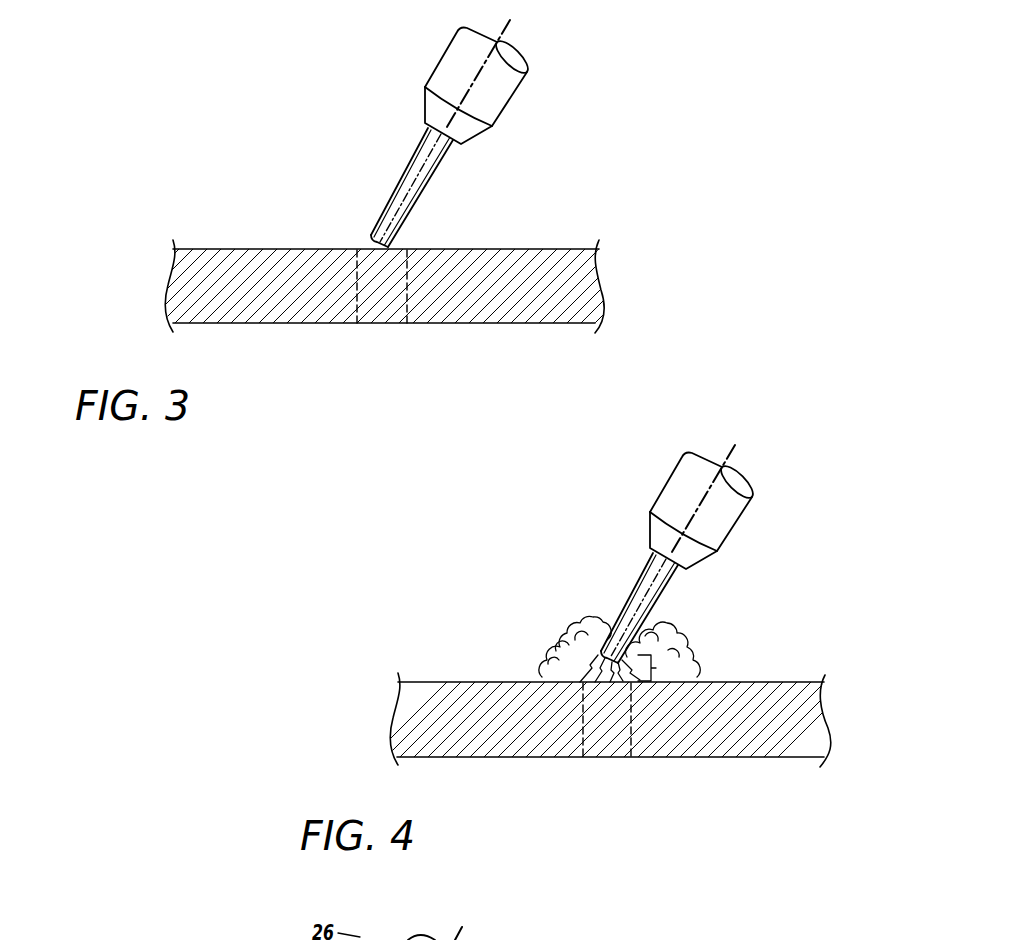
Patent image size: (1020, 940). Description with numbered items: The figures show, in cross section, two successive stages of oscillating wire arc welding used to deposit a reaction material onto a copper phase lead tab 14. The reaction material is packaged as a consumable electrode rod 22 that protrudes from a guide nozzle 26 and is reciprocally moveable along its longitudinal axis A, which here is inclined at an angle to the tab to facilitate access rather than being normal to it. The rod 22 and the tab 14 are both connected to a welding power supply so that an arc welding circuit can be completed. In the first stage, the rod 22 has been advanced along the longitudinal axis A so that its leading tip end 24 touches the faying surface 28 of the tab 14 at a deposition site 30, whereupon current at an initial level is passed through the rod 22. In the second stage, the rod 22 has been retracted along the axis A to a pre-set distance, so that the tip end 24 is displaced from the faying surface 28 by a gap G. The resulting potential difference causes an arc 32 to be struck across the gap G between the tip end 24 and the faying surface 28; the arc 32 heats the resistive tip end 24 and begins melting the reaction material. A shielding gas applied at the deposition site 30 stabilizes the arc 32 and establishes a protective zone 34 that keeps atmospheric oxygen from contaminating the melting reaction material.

In FIG. 3, the copper phase lead tab 14 is at (567, 289).
In FIG. 4, the copper phase lead tab 14 is at (788, 720).
In FIG. 3, the reaction material electrode rod 22 is at (407, 167).
In FIG. 4, the reaction material electrode rod 22 is at (611, 594).
In FIG. 3, the tip end 24 is at (364, 243).
In FIG. 4, the tip end 24 is at (596, 650).
In FIG. 3, the guide nozzle 26 is at (452, 70).
In FIG. 4, the guide nozzle 26 is at (670, 506).
In FIG. 3, the faying surface 28 is at (543, 249).
In FIG. 4, the faying surface 28 is at (770, 682).
In FIG. 3, the deposition site 30 is at (408, 277).
In FIG. 4, the deposition site 30 is at (634, 726).
In FIG. 4, the arc 32 is at (590, 670).
In FIG. 4, the protective zone 34 is at (662, 623).
In FIG. 3, the longitudinal axis A is at (474, 80).
In FIG. 4, the longitudinal axis A is at (726, 503).
In FIG. 4, the gap G is at (655, 669).